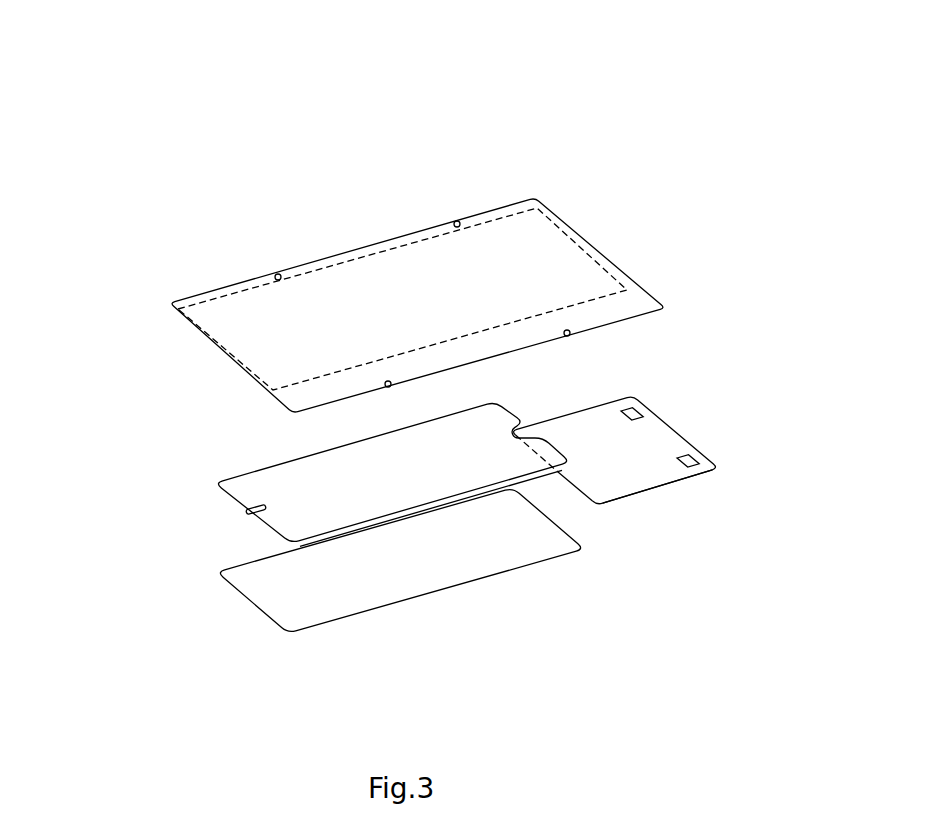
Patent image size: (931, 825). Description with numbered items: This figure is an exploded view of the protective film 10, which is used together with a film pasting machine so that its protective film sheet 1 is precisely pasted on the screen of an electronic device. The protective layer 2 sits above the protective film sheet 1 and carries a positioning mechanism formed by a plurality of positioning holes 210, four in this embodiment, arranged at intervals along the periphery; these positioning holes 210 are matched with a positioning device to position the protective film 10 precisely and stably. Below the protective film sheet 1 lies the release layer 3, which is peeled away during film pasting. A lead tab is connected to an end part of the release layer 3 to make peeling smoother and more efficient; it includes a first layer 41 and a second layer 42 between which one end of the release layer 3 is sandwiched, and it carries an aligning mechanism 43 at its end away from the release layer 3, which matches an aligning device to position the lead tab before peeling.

The protective film 10 is at (422, 105).
The protective layer 2 is at (412, 280).
The positioning holes 210 is at (383, 382).
The protective film sheet 1 is at (289, 498).
The release layer 3 is at (442, 570).
The first layer 41 is at (633, 462).
The second layer 42 is at (662, 487).
The aligning mechanism 43 is at (698, 463).